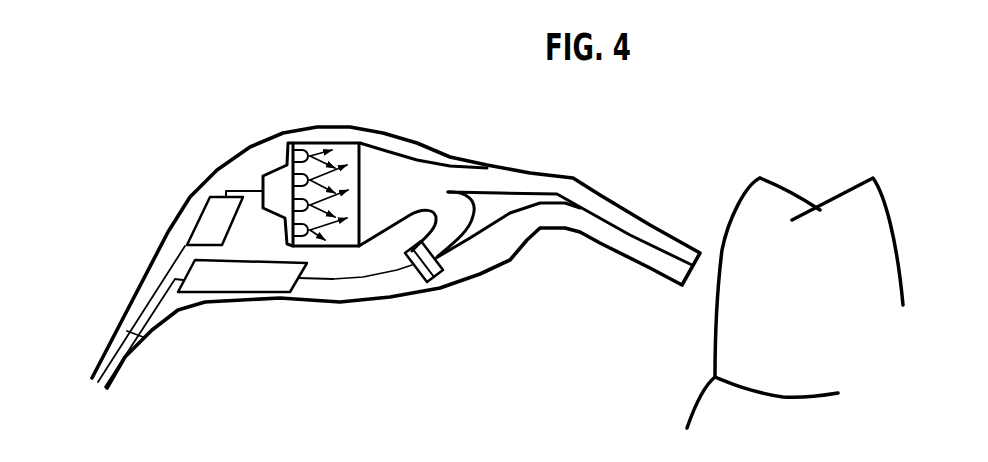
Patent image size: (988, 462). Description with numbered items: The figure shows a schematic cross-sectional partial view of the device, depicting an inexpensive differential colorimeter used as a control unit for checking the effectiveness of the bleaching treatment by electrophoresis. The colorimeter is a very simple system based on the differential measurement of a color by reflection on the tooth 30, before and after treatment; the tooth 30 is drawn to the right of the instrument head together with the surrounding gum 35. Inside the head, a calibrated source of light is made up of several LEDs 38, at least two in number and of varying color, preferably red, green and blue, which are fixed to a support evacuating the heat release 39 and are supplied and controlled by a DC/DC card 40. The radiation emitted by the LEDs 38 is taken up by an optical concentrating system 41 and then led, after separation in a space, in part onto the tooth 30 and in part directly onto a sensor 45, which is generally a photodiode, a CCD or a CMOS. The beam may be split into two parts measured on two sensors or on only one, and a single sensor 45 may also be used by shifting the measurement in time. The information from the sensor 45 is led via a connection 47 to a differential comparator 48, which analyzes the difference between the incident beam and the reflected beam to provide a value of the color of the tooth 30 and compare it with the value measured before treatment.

The tooth 30 is at (767, 237).
The gum tissue 35 is at (707, 412).
The LEDs 38 is at (303, 150).
The support evacuating the heat release 39 is at (277, 187).
The DC/DC card 40 is at (212, 223).
The optical concentrating system 41 is at (373, 188).
The sensor 45 is at (422, 282).
The connection 47 is at (337, 278).
The differential comparator 48 is at (252, 273).